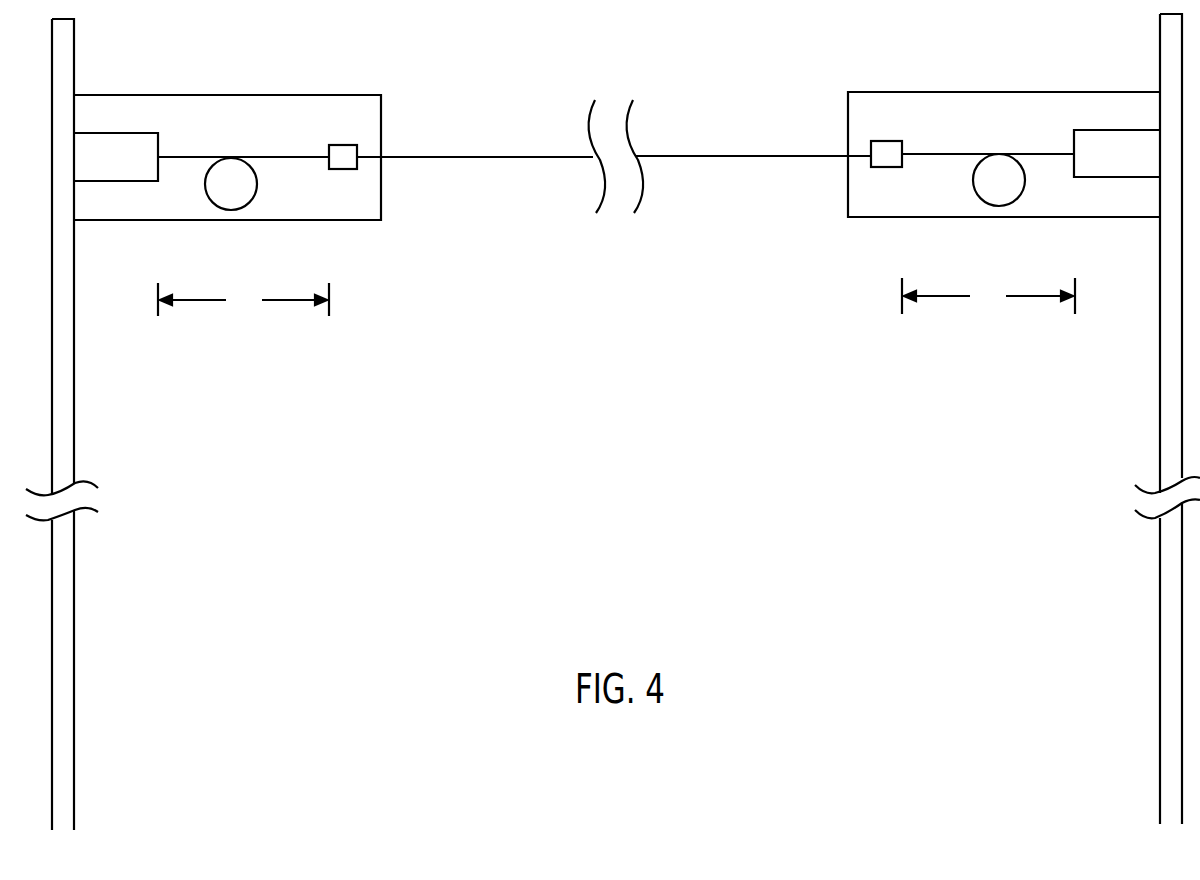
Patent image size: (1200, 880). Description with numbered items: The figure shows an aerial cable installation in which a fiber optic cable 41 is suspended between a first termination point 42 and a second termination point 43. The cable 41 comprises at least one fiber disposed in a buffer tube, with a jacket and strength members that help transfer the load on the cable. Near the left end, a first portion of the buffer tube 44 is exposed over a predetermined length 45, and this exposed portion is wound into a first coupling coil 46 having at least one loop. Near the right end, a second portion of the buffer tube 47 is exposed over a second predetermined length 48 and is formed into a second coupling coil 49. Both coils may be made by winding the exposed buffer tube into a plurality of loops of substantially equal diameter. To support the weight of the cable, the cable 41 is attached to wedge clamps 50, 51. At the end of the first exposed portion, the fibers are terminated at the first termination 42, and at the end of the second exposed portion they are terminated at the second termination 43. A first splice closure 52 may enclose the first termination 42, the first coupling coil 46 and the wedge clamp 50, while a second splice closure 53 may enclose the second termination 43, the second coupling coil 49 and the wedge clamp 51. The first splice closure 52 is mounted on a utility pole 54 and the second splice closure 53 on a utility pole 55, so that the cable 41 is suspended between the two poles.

The cable 41 is at (728, 155).
The first termination point 42 is at (158, 143).
The second termination point 43 is at (1074, 145).
The first portion of the buffer tube 44 is at (278, 152).
The predetermined length 45 is at (243, 299).
The first coupling coil 46 is at (257, 186).
The second portion of the buffer tube 47 is at (947, 152).
The second predetermined length 48 is at (988, 296).
The second coupling coil 49 is at (972, 188).
The wedge clamp 50 is at (357, 150).
The wedge clamp 51 is at (871, 147).
The first splice closure 52 is at (133, 222).
The second splice closure 53 is at (1130, 219).
The utility pole 54 is at (75, 656).
The utility pole 55 is at (1160, 643).